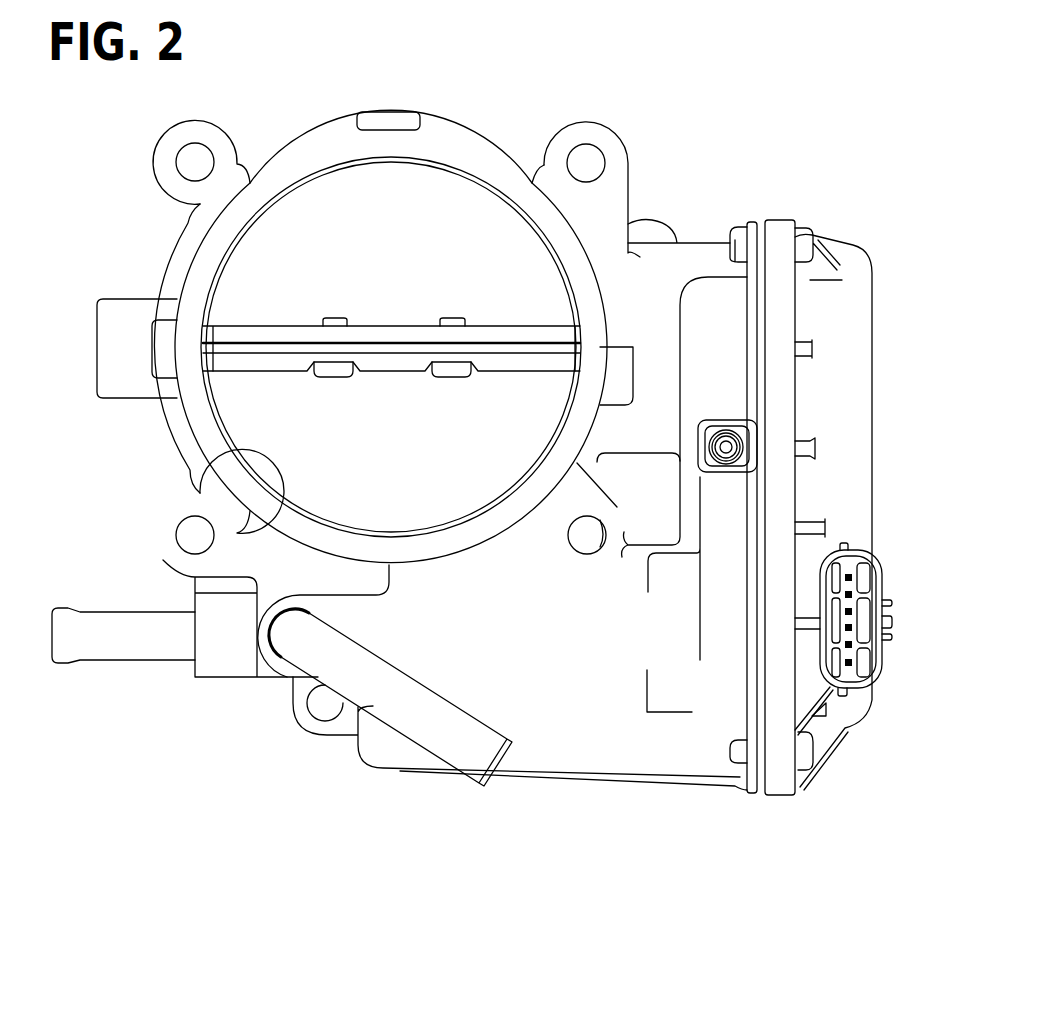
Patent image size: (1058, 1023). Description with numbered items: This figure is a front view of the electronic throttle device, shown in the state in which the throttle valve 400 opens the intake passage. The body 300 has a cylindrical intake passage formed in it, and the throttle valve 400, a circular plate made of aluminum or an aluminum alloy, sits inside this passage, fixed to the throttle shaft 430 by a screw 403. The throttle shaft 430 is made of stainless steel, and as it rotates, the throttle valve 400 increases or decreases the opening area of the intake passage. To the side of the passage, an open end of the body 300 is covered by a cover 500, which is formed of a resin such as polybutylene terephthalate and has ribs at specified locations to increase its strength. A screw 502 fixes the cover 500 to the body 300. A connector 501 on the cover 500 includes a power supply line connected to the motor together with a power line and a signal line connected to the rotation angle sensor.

The body 300 is at (592, 743).
The throttle valve 400 is at (277, 347).
The screw 403 is at (332, 372).
The throttle shaft 430 is at (537, 333).
The cover 500 is at (845, 372).
The connector 501 is at (880, 557).
The screw 502 is at (810, 240).